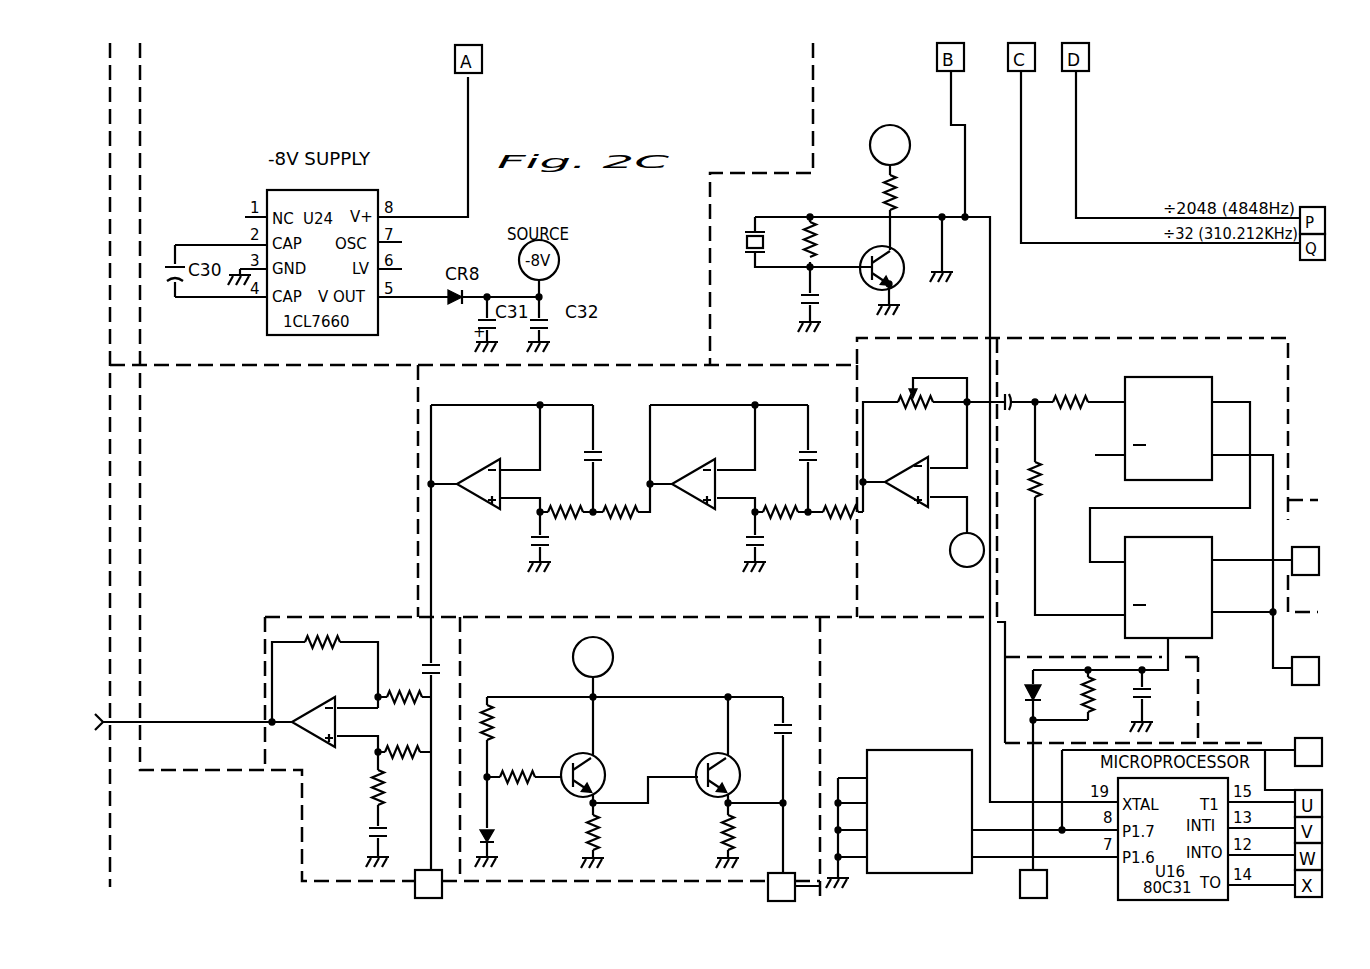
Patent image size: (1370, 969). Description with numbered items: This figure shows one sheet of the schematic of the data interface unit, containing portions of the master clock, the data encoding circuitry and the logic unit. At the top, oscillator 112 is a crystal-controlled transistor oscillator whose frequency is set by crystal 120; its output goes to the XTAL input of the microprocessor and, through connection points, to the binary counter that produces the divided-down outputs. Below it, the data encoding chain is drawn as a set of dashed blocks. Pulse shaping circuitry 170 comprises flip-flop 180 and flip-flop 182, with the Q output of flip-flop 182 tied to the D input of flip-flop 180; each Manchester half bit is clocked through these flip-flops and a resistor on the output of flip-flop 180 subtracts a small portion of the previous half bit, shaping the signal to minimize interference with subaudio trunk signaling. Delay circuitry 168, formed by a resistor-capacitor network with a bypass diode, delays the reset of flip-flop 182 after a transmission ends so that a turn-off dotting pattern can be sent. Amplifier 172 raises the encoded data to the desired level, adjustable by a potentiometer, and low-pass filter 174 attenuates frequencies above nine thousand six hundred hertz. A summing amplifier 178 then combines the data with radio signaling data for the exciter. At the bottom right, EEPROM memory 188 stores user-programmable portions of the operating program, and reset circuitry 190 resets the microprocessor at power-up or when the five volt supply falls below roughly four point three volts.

The oscillator 112 is at (890, 286).
The crystal 120 is at (748, 252).
The delay circuitry 168 is at (1198, 680).
The pulse shaping circuitry 170 is at (1154, 590).
The amplifier 172 is at (999, 579).
The low-pass filter 174 is at (418, 446).
The summing amplifier 178 is at (258, 625).
The flip-flop 180 is at (1224, 366).
The flip-flop 182 is at (1195, 537).
The EEPROM memory 188 is at (894, 750).
The reset circuitry 190 is at (714, 697).